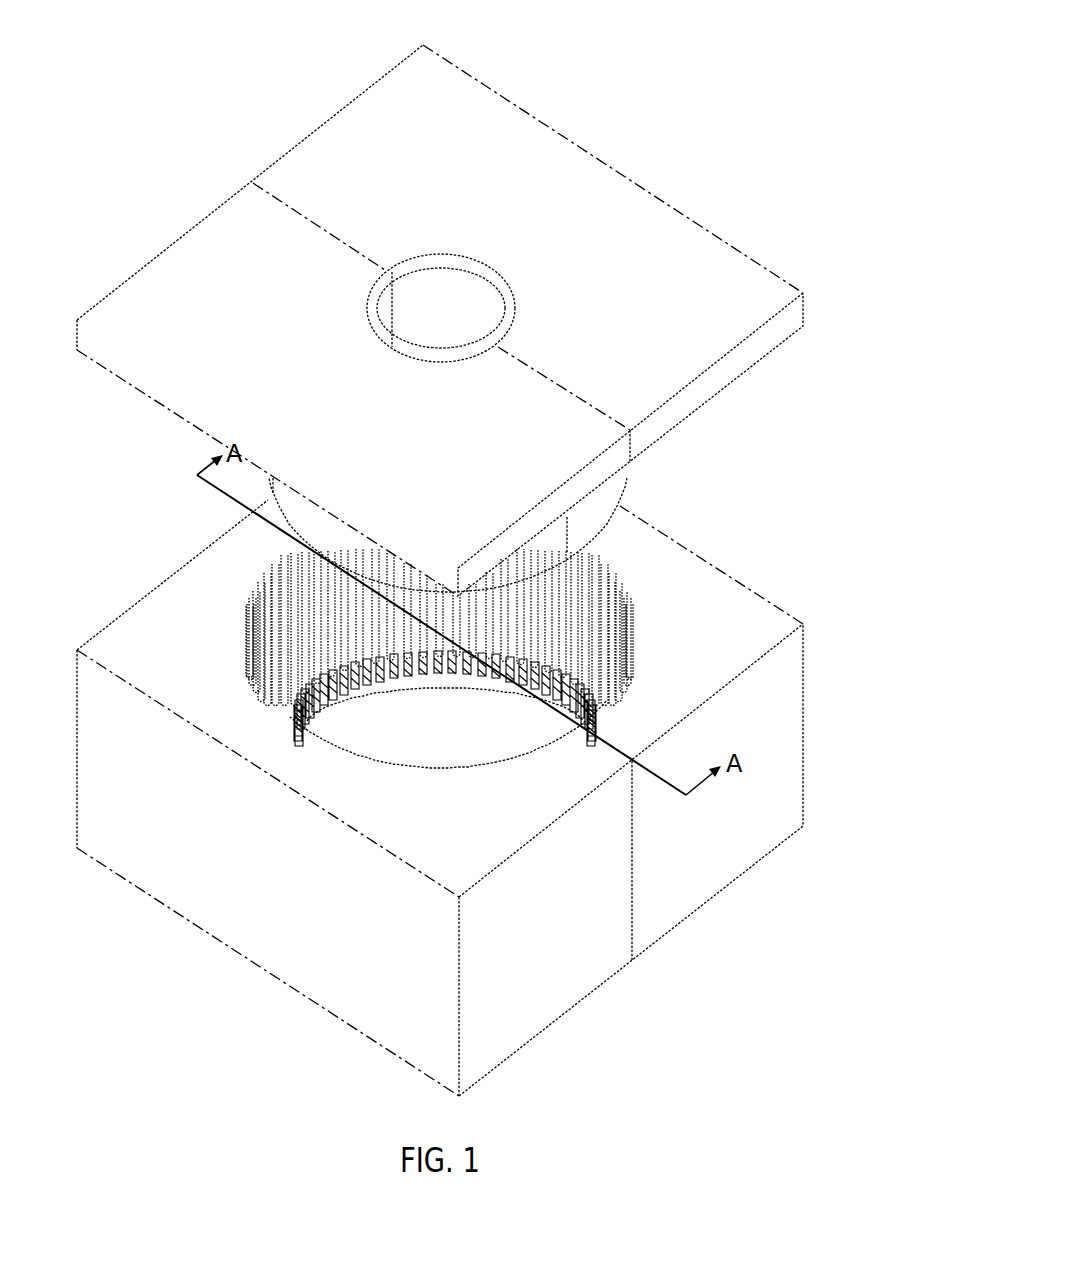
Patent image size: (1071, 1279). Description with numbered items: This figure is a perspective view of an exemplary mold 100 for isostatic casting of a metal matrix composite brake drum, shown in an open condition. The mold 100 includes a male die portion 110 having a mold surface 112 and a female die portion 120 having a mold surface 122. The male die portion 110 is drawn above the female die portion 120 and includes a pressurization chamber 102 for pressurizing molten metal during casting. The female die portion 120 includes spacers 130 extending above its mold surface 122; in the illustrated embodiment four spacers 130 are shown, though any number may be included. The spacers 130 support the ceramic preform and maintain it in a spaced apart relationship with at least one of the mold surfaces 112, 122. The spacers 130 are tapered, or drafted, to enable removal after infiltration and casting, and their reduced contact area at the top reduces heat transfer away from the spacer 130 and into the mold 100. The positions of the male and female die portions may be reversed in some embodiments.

The mold 100 is at (673, 72).
The male die portion 110 is at (152, 285).
The pressurization chamber 102 is at (445, 300).
The mold surface 112 is at (606, 502).
The female die portion 120 is at (115, 643).
The mold surface 122 is at (287, 600).
The spacers 130 is at (596, 700).